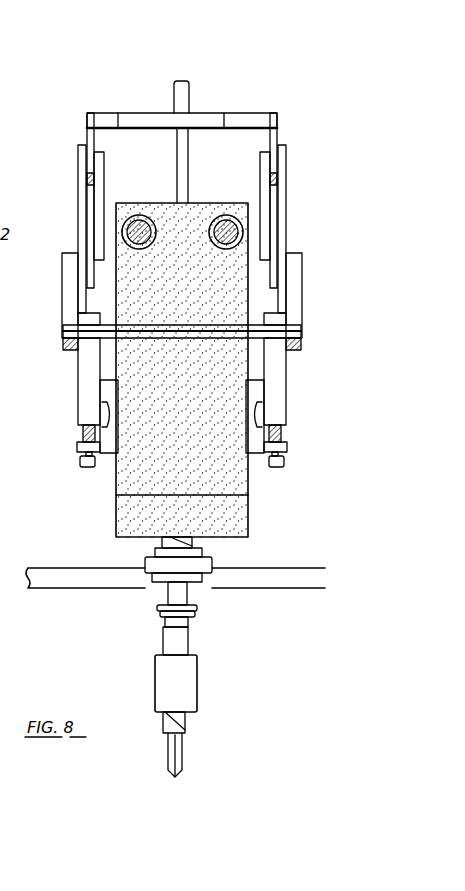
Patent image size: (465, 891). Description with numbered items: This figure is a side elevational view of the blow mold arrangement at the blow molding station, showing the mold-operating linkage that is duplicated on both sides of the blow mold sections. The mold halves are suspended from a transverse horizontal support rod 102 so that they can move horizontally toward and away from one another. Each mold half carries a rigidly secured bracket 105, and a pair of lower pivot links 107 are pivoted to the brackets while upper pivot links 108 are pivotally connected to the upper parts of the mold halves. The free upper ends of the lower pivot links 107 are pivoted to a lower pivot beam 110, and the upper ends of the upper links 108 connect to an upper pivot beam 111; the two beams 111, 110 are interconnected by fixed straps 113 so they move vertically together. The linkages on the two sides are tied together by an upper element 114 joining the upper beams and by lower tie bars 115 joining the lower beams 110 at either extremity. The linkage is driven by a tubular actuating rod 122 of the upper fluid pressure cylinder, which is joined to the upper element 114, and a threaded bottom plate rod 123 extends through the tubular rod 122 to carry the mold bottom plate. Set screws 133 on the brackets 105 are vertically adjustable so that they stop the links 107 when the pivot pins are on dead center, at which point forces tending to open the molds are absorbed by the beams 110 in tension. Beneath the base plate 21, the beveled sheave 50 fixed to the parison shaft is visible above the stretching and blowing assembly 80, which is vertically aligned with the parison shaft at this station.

The base plate 21 is at (45, 568).
The beveled sheave 50 is at (197, 613).
The stretching and blowing assembly 80 is at (202, 688).
The horizontal support rod 102 is at (140, 230).
The bracket 105 is at (108, 445).
The lower pivot links 107 is at (78, 384).
The upper pivot links 108 is at (97, 165).
The lower pivot beam 110 is at (65, 272).
The upper pivot beam 111 is at (86, 134).
The fixed straps 113 is at (82, 173).
The upper element 114 is at (137, 119).
The lower tie bars 115 is at (182, 330).
The actuating rod 122 is at (185, 94).
The threaded bottom plate rod 123 is at (188, 150).
The set screws 133 is at (80, 463).